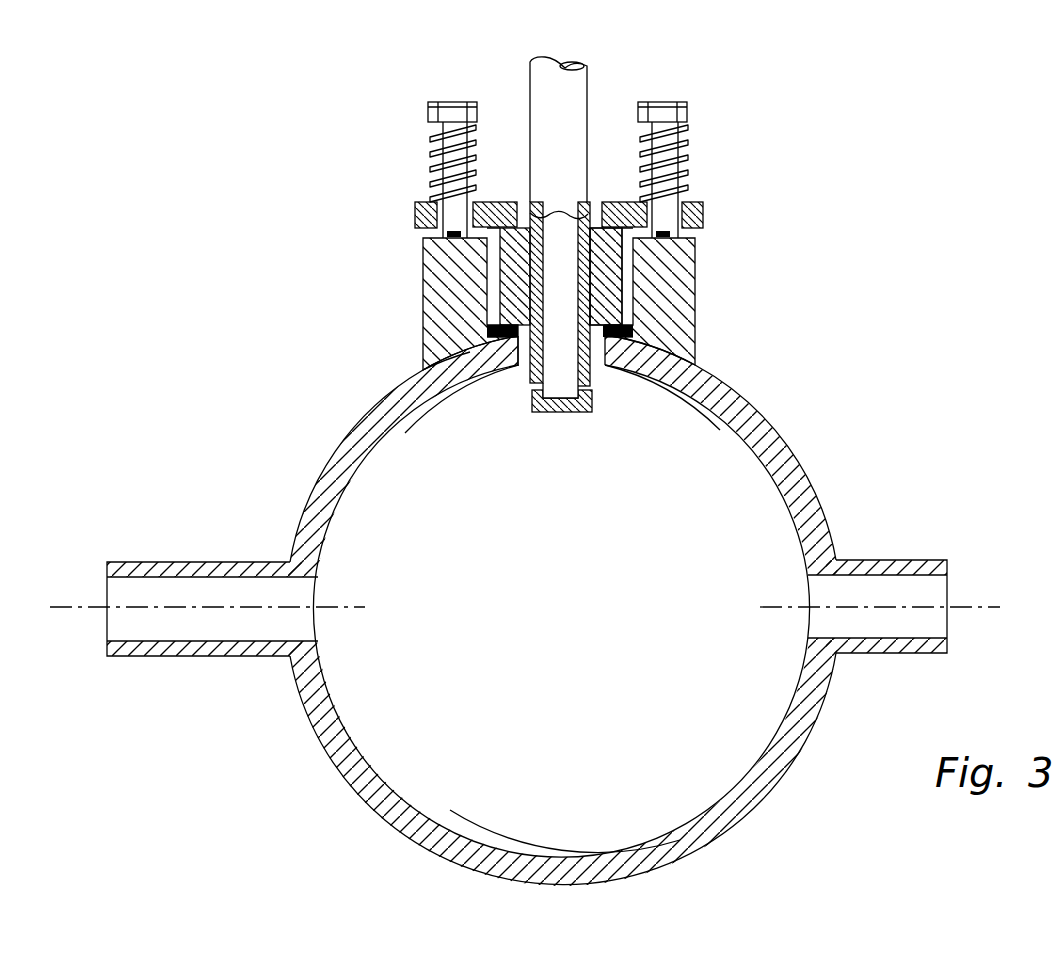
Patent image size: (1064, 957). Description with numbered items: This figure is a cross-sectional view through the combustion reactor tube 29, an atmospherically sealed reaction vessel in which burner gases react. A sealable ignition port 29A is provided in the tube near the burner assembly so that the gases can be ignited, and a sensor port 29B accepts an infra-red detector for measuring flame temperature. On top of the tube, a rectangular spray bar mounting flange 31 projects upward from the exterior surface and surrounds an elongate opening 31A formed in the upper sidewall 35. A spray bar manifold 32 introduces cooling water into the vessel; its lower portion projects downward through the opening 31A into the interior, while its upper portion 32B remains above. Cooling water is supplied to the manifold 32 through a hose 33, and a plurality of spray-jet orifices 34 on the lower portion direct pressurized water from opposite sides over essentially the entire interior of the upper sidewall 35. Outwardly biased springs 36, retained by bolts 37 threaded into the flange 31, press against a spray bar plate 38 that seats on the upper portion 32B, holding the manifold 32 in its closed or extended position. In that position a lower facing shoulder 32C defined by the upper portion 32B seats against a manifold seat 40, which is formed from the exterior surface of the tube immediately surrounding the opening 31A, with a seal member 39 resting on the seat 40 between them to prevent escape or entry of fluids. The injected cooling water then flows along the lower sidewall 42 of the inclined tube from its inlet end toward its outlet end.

The combustion reactor tube 29 is at (797, 447).
The sealable ignition port 29A is at (873, 598).
The sensor port 29B is at (200, 600).
The spray bar mounting flange 31 is at (695, 348).
The elongate opening 31A is at (467, 380).
The spray bar manifold 32 is at (608, 267).
The upper portion of the manifold 32B is at (613, 297).
The lower facing shoulder 32C is at (627, 370).
The hose 33 is at (557, 93).
The spray-jet orifices 34 is at (533, 390).
The upper sidewall 35 is at (405, 433).
The outwardly biased springs 36 is at (430, 155).
The bolts 37 is at (440, 102).
The spray bar plate 38 is at (415, 217).
The seal member 39 is at (505, 358).
The manifold seat 40 is at (507, 368).
The lower sidewall 42 is at (568, 852).